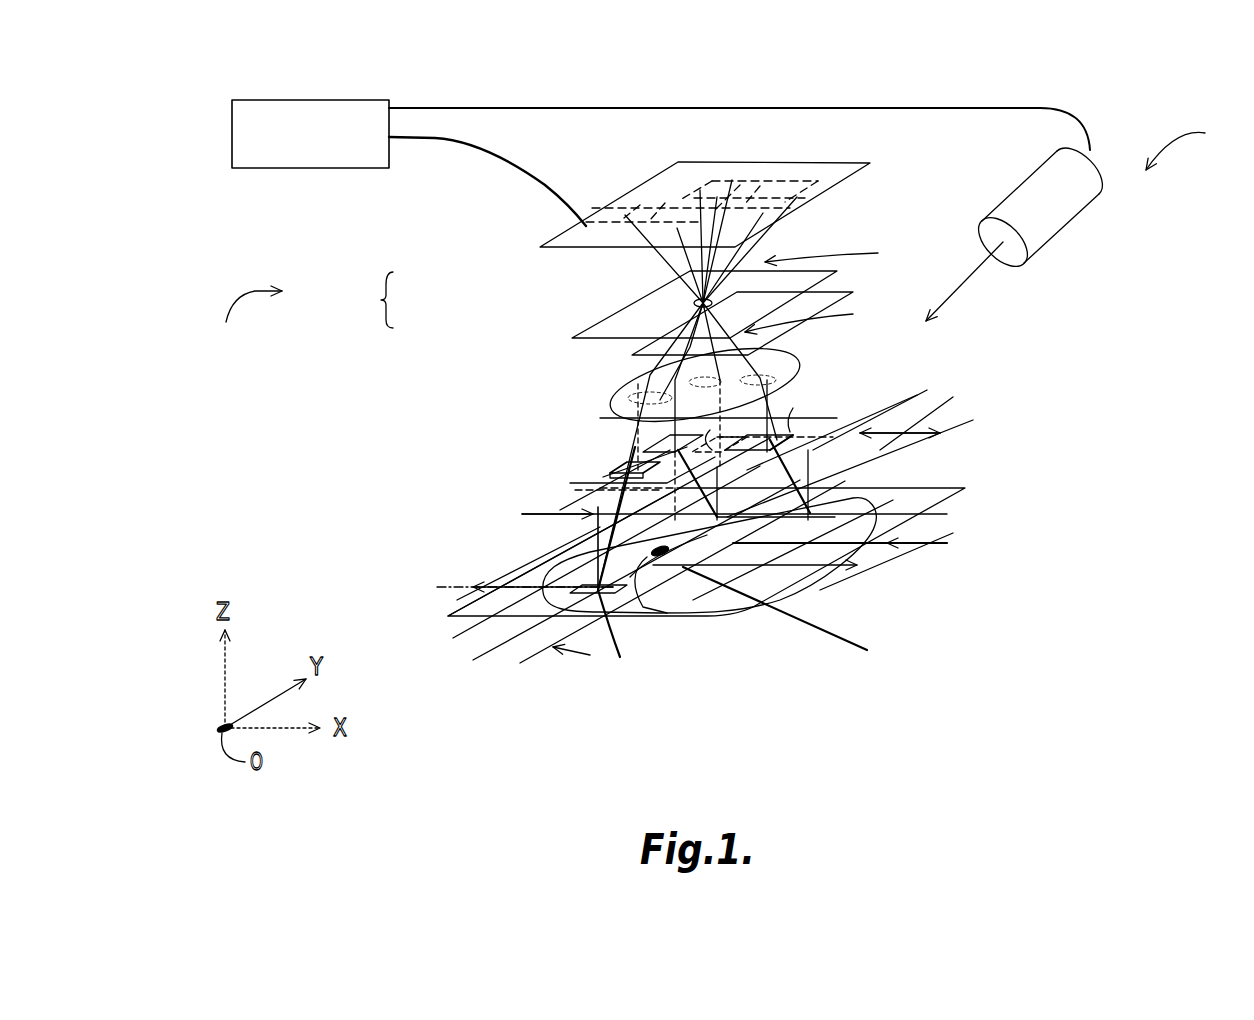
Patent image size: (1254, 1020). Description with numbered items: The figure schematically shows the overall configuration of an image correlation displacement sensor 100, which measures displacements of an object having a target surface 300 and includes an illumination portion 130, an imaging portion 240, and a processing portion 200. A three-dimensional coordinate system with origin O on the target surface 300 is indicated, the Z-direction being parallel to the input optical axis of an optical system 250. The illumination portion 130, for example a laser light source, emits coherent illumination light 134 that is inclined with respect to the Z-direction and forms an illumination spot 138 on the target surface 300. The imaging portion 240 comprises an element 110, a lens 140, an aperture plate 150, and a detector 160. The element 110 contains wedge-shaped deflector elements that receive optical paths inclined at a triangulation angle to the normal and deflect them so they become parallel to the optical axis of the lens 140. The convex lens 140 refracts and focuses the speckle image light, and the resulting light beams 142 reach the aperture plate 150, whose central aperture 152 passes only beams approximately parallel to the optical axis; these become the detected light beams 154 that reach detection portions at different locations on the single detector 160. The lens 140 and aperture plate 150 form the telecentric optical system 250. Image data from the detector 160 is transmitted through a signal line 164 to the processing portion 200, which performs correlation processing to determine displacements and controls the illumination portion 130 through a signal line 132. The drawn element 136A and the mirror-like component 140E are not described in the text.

The displacement sensor 100 is at (1198, 146).
The element 110 is at (597, 487).
The illumination portion 130 is at (1040, 272).
The signal line 132 is at (667, 111).
The illumination light 134 is at (990, 298).
The reflecting post 136A is at (597, 497).
The illumination spot 138 is at (757, 587).
The lens 140 is at (613, 378).
The mirror 140E is at (815, 368).
The light beams 142 is at (818, 316).
The aperture plate 150 is at (630, 327).
The aperture 152 is at (740, 292).
The detected light beams 154 is at (864, 253).
The detector 160 is at (808, 162).
The signal line 164 is at (497, 158).
The processing portion 200 is at (232, 135).
The imaging portion 240 is at (243, 320).
The optical system 250 is at (361, 300).
The target surface 300 is at (745, 613).